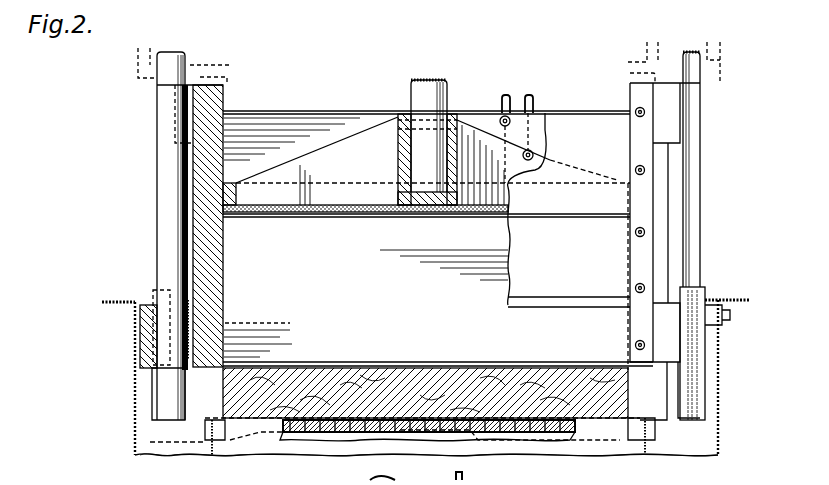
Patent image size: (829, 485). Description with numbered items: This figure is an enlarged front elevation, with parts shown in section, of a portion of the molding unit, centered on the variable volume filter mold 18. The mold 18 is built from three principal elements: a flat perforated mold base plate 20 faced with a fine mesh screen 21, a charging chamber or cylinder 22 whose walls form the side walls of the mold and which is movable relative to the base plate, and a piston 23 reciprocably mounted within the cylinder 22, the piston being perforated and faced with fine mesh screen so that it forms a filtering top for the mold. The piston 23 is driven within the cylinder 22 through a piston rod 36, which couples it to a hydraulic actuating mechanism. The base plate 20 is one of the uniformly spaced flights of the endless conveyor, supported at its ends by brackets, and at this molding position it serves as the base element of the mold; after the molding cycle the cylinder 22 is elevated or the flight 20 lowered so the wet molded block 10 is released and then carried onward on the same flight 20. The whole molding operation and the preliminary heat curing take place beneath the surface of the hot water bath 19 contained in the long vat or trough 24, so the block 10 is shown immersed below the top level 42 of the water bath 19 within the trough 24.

The molded block 10 is at (629, 370).
The mold 18 is at (715, 282).
The water bath 19 is at (142, 412).
The mold base plate 20 is at (550, 428).
The fine mesh screen 21 is at (470, 226).
The charging chamber or cylinder 22 is at (258, 226).
The piston 23 is at (355, 206).
The trough 24 is at (136, 372).
The piston rod 36 is at (448, 110).
The top level of the hot water bath 42 is at (152, 298).